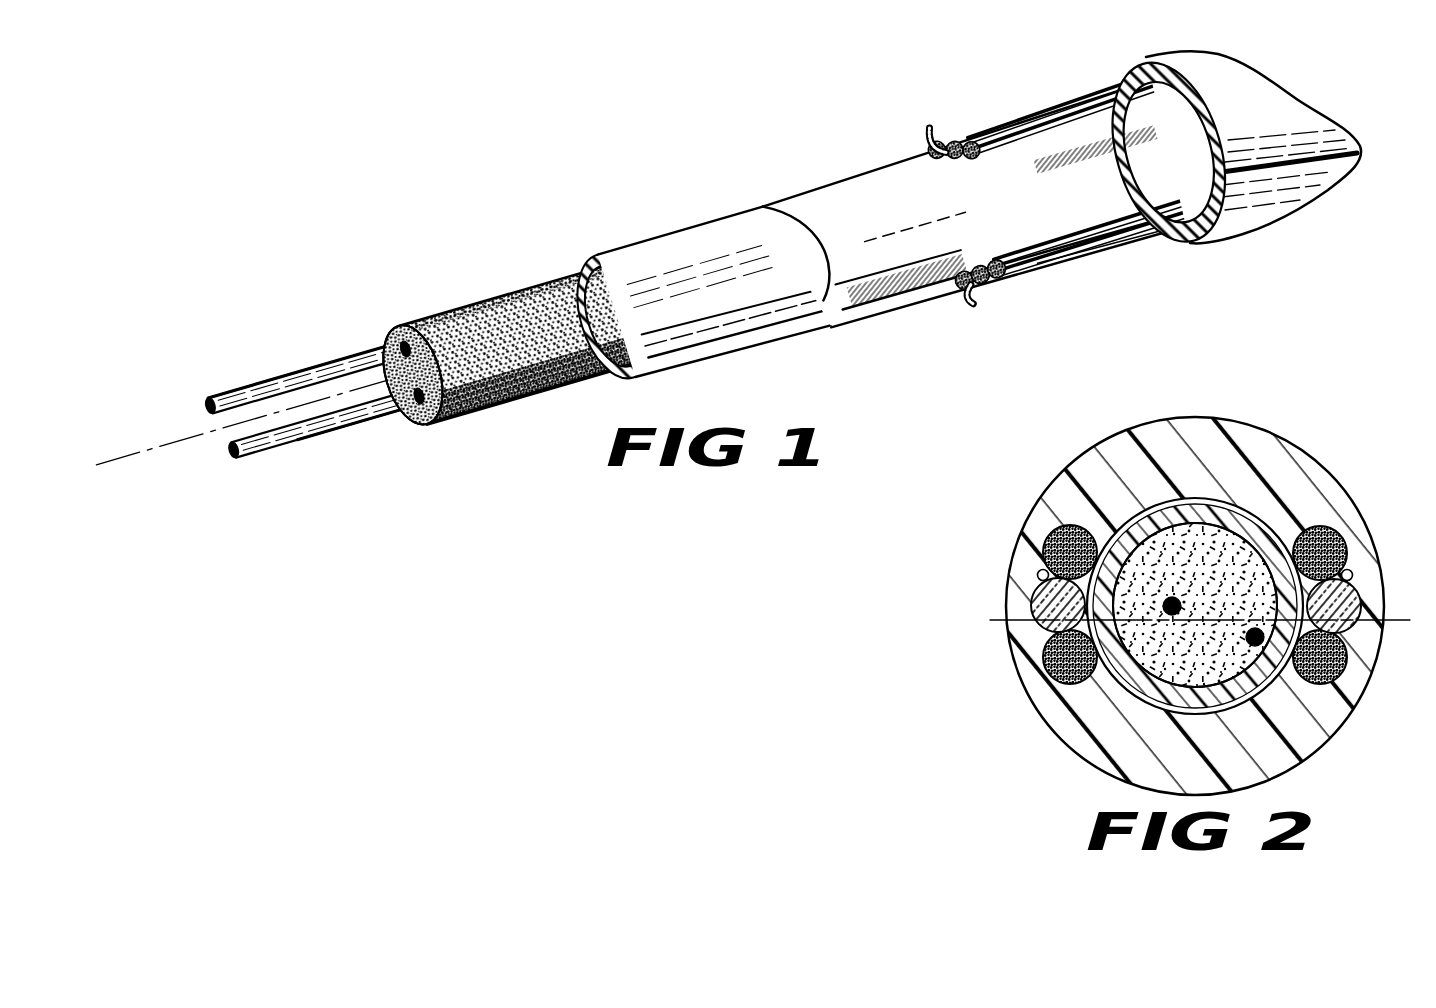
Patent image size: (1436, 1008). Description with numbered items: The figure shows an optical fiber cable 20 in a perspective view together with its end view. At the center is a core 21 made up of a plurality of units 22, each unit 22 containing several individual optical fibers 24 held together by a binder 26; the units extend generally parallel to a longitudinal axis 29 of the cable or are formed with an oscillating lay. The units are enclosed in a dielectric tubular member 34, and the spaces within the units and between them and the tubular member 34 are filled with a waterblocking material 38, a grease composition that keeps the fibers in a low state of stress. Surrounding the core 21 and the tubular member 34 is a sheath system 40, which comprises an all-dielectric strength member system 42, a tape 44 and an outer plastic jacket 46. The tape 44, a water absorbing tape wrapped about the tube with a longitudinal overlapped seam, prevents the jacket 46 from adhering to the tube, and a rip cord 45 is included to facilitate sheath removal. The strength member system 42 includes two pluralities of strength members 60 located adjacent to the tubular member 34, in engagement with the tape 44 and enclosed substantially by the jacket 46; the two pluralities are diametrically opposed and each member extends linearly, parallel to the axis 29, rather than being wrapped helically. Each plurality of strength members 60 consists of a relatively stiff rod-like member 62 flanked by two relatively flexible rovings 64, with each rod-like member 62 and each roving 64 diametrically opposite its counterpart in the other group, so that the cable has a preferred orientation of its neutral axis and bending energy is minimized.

In FIG. 1, the optical fiber cable 20 is at (728, 277).
In FIG. 2, the optical fiber cable 20 is at (1190, 590).
In FIG. 1, the core 21 is at (420, 396).
In FIG. 2, the core 21 is at (1198, 632).
In FIG. 1, the unit 22 is at (311, 361).
In FIG. 2, the unit 22 is at (1172, 606).
In FIG. 1, the optical fiber 24 is at (329, 445).
In FIG. 2, the optical fiber 24 is at (1255, 637).
In FIG. 1, the binder 26 is at (364, 431).
In FIG. 1, the longitudinal axis 29 is at (247, 434).
In FIG. 1, the tubular member 34 is at (615, 294).
In FIG. 2, the tubular member 34 is at (1195, 584).
In FIG. 1, the waterblocking material 38 is at (505, 343).
In FIG. 2, the waterblocking material 38 is at (1195, 640).
In FIG. 1, the sheath system 40 is at (714, 303).
In FIG. 1, the strength member system 42 is at (1114, 266).
In FIG. 1, the tape 44 is at (800, 223).
In FIG. 2, the tape 44 is at (1195, 585).
In FIG. 1, the rip cord 45 is at (1073, 181).
In FIG. 2, the rip cord 45 is at (1187, 552).
In FIG. 1, the outer plastic jacket 46 is at (1227, 167).
In FIG. 2, the outer plastic jacket 46 is at (1195, 590).
In FIG. 1, the plurality of strength members 60 is at (974, 209).
In FIG. 1, the rod-like member 62 is at (979, 211).
In FIG. 2, the rod-like member 62 is at (1190, 601).
In FIG. 1, the flexible member 64 is at (961, 210).
In FIG. 2, the flexible member 64 is at (1193, 608).